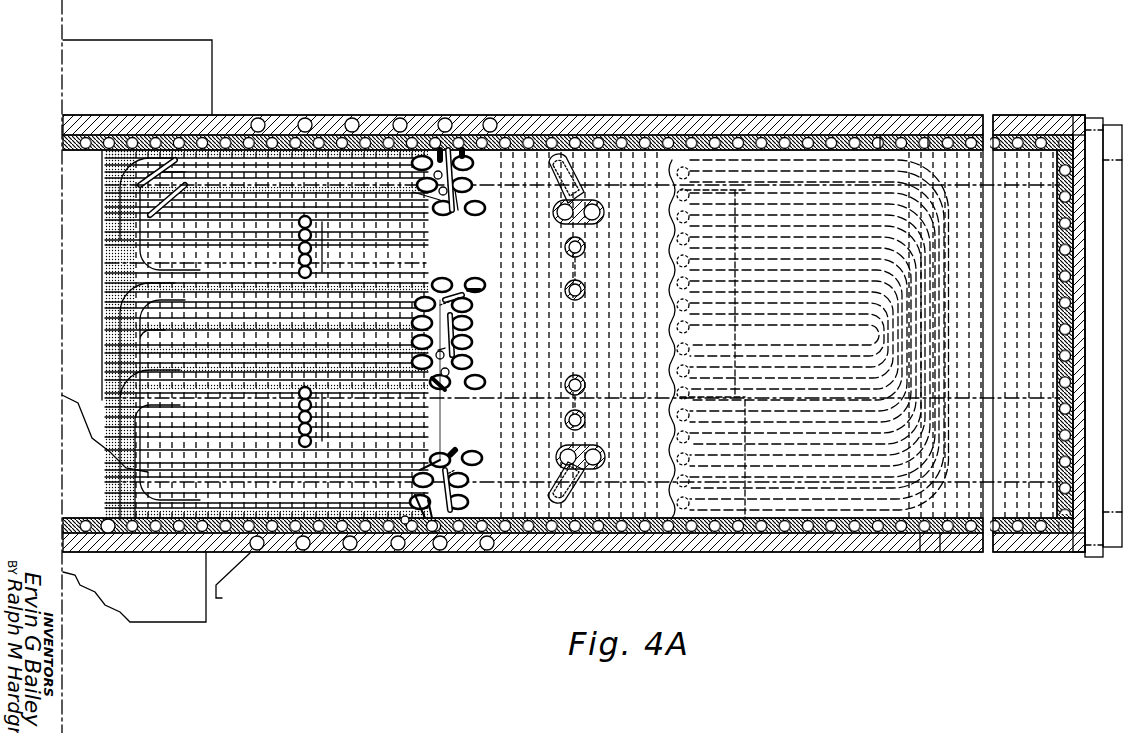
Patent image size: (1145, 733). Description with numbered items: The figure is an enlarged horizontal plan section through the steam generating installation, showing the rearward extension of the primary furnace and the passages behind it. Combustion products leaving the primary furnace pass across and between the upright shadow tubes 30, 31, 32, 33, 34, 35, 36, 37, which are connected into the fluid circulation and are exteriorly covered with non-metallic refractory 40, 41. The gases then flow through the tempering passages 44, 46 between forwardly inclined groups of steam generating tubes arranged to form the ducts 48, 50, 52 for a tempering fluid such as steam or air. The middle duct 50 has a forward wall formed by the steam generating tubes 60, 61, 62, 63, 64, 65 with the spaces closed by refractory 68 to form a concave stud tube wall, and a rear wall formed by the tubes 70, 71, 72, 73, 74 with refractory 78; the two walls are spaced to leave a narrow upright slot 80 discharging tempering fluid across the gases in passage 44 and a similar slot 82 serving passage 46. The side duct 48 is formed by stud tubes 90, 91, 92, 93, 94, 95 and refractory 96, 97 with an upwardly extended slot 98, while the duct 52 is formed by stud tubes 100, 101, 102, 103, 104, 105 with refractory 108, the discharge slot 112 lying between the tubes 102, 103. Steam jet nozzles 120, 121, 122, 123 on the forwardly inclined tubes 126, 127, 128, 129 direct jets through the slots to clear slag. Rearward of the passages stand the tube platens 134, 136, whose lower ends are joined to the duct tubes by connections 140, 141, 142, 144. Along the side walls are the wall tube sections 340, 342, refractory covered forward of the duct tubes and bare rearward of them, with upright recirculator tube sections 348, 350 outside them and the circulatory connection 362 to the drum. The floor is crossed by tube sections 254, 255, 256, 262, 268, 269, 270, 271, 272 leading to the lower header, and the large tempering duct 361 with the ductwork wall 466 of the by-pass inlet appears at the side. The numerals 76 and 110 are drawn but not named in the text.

The shadow tube 30 is at (606, 210).
The shadow tube 31 is at (556, 212).
The shadow tube 32 is at (587, 247).
The shadow tube 33 is at (587, 290).
The shadow tube 34 is at (587, 385).
The shadow tube 35 is at (587, 420).
The shadow tube 36 is at (605, 457).
The shadow tube 37 is at (559, 457).
The non-metallic refractory 40 is at (563, 290).
The non-metallic refractory 41 is at (563, 385).
The tempering passage 44 is at (470, 282).
The tempering passage 46 is at (462, 470).
The tempering fluid duct 48 is at (466, 172).
The middle tempering fluid duct 50 is at (470, 333).
The tempering fluid duct 52 is at (470, 503).
The steam generating tube 60 is at (484, 286).
The steam generating tube 61 is at (470, 305).
The steam generating tube 62 is at (470, 323).
The steam generating tube 63 is at (470, 345).
The steam generating tube 64 is at (470, 362).
The steam generating tube 65 is at (483, 383).
The non-metallic refractory 68 is at (468, 392).
The steam generating tube 70 is at (442, 278).
The steam generating tube 71 is at (422, 336).
The steam generating tube 72 is at (424, 318).
The steam generating tube 73 is at (420, 366).
The steam generating tube 74 is at (437, 388).
The tube 76 is at (440, 390).
The refractory material 78 is at (418, 346).
The upright slot 80 is at (466, 284).
The slot 82 is at (441, 452).
The stud tube 90 is at (425, 178).
The stud tube 91 is at (420, 160).
The stud tube 92 is at (438, 203).
The stud tube 93 is at (463, 156).
The stud tube 94 is at (474, 190).
The stud tube 95 is at (482, 208).
The refractory material 96 is at (490, 134).
The refractory material 97 is at (438, 170).
The slot 98 is at (459, 209).
The stud tube 100 is at (420, 547).
The stud tube 101 is at (405, 547).
The stud tube 102 is at (398, 547).
The stud tube 103 is at (476, 456).
The stud tube 104 is at (468, 500).
The stud tube 105 is at (446, 546).
The refractory material 108 is at (468, 480).
The tube 110 is at (432, 547).
The discharge slot 112 is at (467, 472).
The steam jet nozzle 120 is at (424, 192).
The steam jet nozzle 121 is at (470, 300).
The steam jet nozzle 122 is at (432, 458).
The steam jet nozzle 123 is at (482, 458).
The forwardly inclined tube 126 is at (444, 186).
The forwardly inclined tube 127 is at (320, 318).
The forwardly inclined tube 128 is at (480, 370).
The forwardly inclined tube 129 is at (436, 546).
The tube platen 134 is at (315, 248).
The tube platen 136 is at (315, 430).
The connection 140 is at (178, 165).
The connection 141 is at (162, 175).
The connection 142 is at (102, 305).
The connection 144 is at (102, 332).
The wall tube section 254 is at (933, 134).
The wall tube section 255 is at (955, 134).
The tube section 256 is at (893, 134).
The floor section 262 is at (810, 312).
The wall tube section 268 is at (945, 552).
The tube section 269 is at (925, 552).
The floor section 270 is at (698, 365).
The floor section 271 is at (835, 352).
The downwardly extending section 272 is at (700, 300).
The wall tube section 340 is at (229, 134).
The wall tube section 342 is at (200, 533).
The recirculator tube section 348 is at (350, 116).
The recirculator tube section 350 is at (340, 551).
The tempering fluid duct 361 is at (170, 622).
The circulatory connection 362 is at (214, 53).
The ductwork wall 466 is at (229, 592).